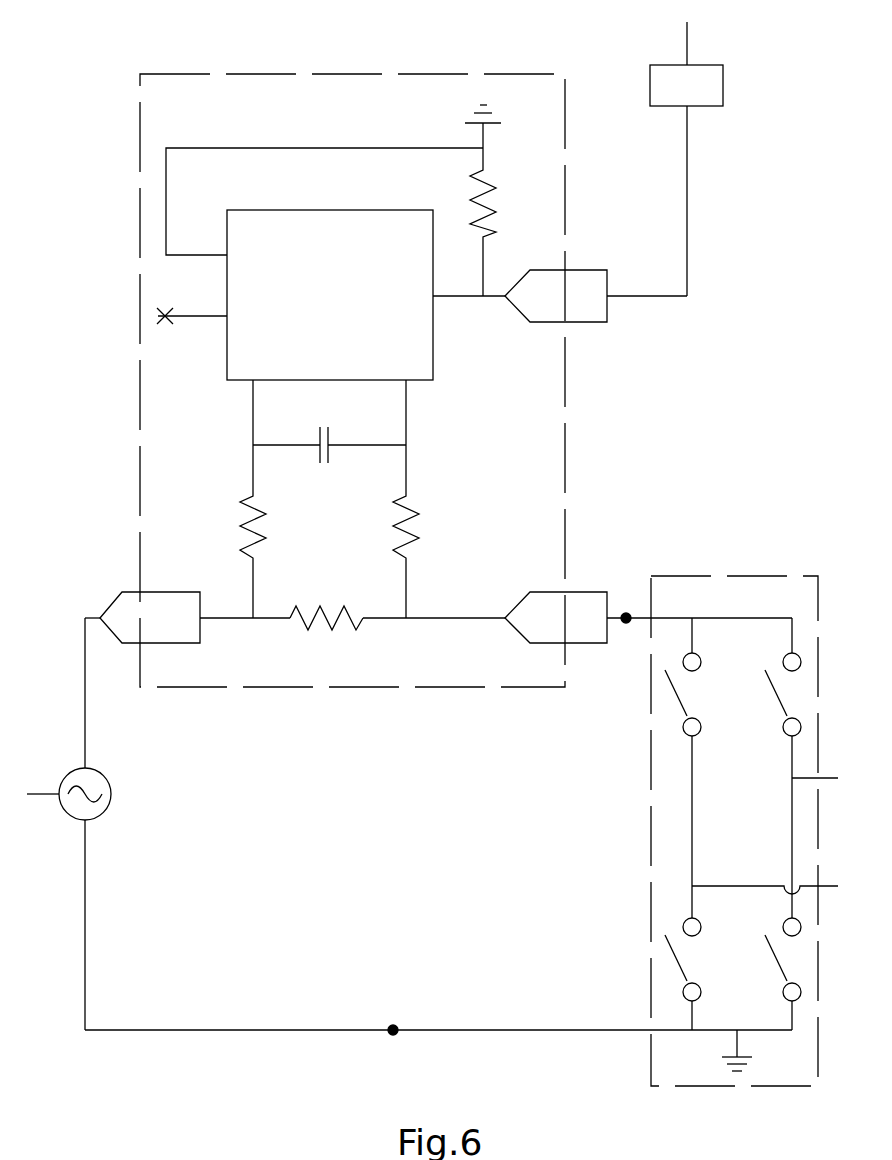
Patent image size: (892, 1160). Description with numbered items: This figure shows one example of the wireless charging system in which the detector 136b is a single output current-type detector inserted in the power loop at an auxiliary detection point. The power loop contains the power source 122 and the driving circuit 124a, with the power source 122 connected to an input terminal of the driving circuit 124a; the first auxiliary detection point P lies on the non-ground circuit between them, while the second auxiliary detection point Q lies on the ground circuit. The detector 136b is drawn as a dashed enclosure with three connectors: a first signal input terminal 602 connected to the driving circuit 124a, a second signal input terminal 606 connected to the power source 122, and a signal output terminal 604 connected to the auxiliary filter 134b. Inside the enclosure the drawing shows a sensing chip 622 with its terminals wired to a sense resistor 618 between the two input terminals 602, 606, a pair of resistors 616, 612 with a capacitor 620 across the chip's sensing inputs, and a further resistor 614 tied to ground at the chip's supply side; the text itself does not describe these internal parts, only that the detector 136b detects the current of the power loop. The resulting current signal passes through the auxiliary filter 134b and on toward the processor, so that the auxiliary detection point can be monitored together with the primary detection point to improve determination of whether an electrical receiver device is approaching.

The detector 136b is at (341, 74).
The auxiliary filter 134b is at (686, 159).
The current sensing chip 622 is at (436, 330).
The resistor 614 is at (497, 212).
The signal output terminal 604 is at (603, 322).
The capacitor 620 is at (330, 448).
The resistor 616 is at (262, 538).
The resistor 612 is at (415, 538).
The sensing resistor 618 is at (330, 622).
The second signal input terminal 606 is at (185, 643).
The first signal input terminal 602 is at (577, 643).
The power source 122 is at (62, 775).
The driving circuit 124a is at (735, 578).